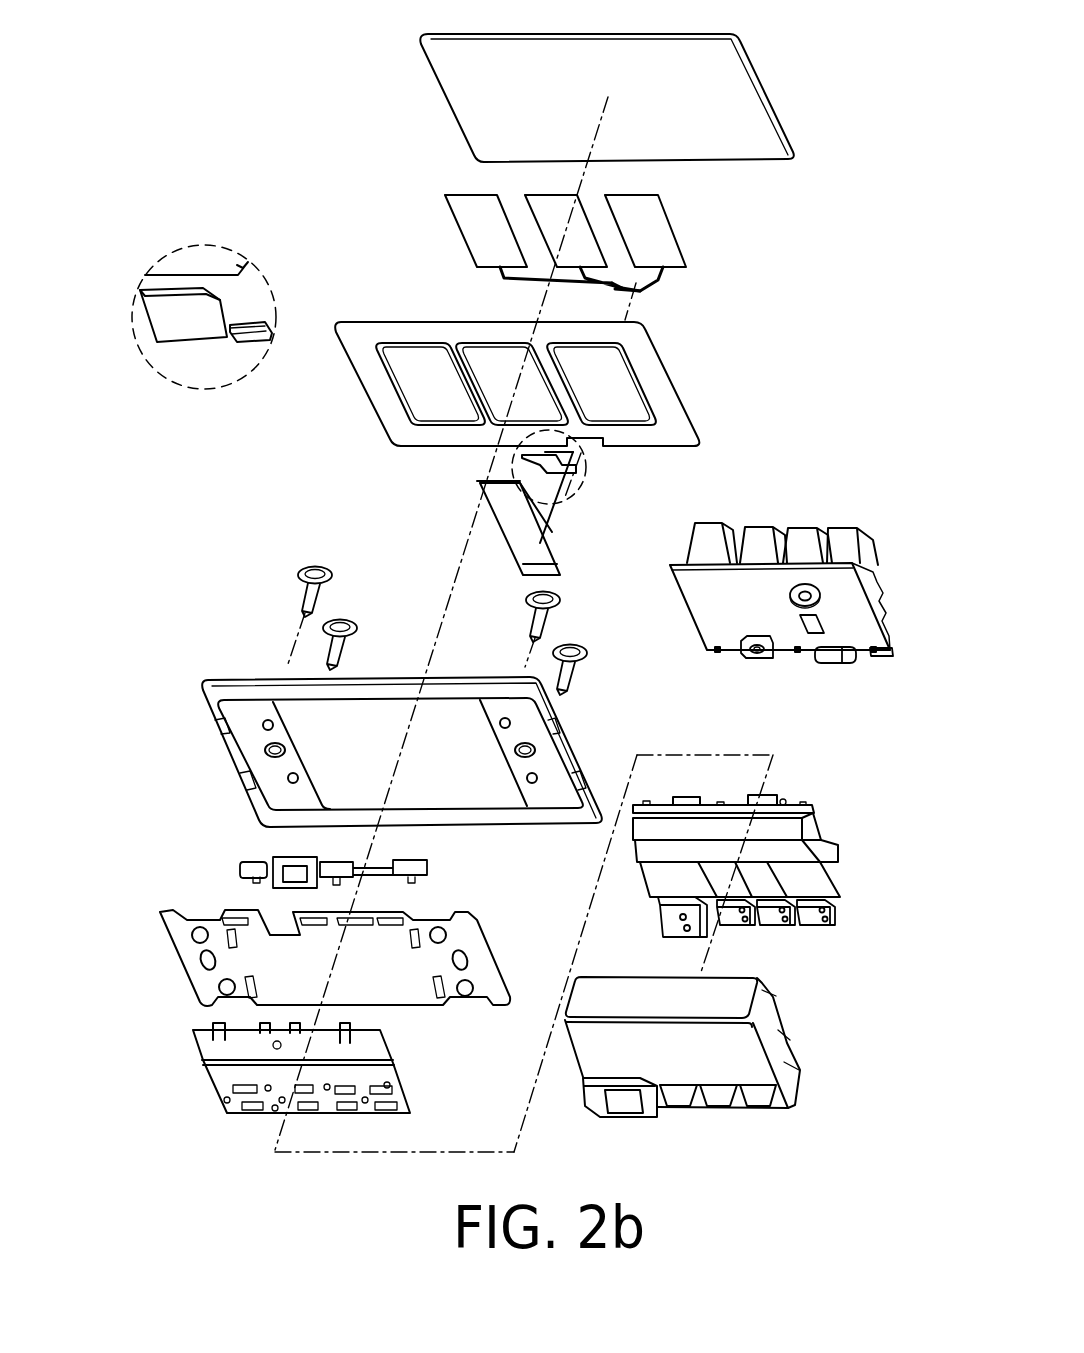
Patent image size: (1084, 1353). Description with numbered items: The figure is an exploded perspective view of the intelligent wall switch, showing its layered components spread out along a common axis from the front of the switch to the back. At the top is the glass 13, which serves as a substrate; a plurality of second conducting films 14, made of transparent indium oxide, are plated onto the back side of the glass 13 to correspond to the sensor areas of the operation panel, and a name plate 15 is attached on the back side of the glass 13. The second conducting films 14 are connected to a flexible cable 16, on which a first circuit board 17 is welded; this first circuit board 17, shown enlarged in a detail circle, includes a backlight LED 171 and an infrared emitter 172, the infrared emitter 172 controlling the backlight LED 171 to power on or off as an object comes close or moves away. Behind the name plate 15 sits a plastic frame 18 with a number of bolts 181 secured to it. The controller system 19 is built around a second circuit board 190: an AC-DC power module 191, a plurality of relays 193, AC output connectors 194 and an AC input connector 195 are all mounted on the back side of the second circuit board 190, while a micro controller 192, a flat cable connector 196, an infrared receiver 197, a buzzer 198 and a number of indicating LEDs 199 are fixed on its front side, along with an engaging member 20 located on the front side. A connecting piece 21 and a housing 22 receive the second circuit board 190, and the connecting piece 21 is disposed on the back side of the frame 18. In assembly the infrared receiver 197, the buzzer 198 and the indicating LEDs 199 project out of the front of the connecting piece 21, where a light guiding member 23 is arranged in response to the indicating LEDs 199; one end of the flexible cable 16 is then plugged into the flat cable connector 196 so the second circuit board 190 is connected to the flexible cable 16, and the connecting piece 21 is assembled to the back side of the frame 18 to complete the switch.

The glass 13 is at (757, 70).
The second conducting films 14 is at (712, 233).
The name plate 15 is at (713, 378).
The flexible cable 16 is at (528, 542).
The first circuit board 17 is at (599, 478).
The backlight LED 171 is at (138, 300).
The infrared emitter 172 is at (273, 324).
The plastic frame 18 is at (208, 678).
The bolts 181 is at (303, 574).
The controller system 19 is at (785, 851).
The second circuit board 190 is at (872, 565).
The AC-DC power module 191 is at (803, 837).
The micro controller 192 is at (803, 585).
The relays 193 is at (833, 873).
The AC output connectors 194 is at (847, 903).
The AC input connector 195 is at (697, 922).
The flat cable connector 196 is at (842, 660).
The infrared receiver 197 is at (768, 660).
The buzzer 198 is at (783, 530).
The indicating LEDs 199 is at (873, 660).
The engaging member 20 is at (393, 1063).
The connecting piece 21 is at (480, 920).
The housing 22 is at (787, 1023).
The light guiding member 23 is at (427, 867).